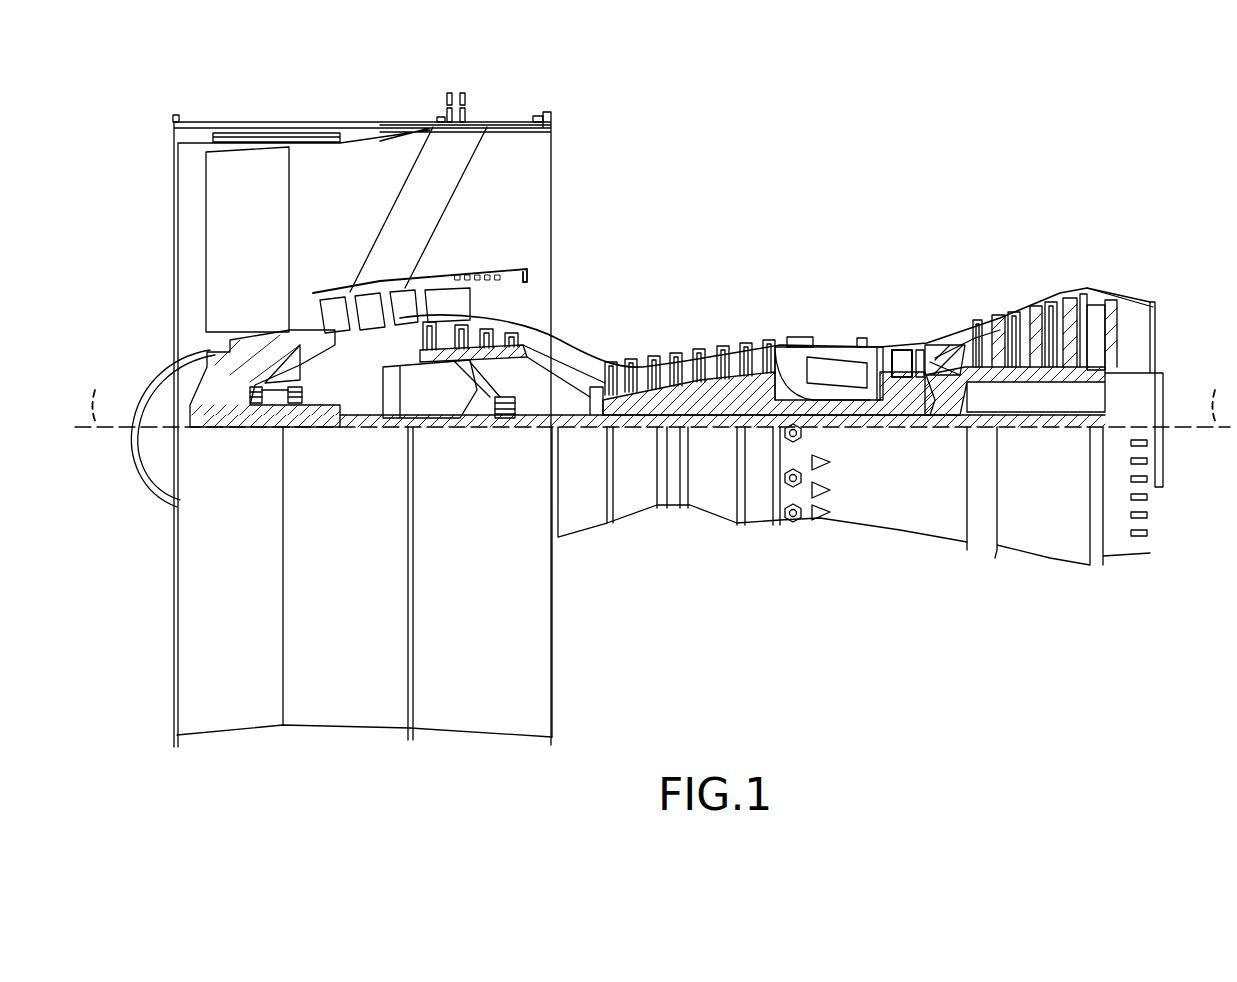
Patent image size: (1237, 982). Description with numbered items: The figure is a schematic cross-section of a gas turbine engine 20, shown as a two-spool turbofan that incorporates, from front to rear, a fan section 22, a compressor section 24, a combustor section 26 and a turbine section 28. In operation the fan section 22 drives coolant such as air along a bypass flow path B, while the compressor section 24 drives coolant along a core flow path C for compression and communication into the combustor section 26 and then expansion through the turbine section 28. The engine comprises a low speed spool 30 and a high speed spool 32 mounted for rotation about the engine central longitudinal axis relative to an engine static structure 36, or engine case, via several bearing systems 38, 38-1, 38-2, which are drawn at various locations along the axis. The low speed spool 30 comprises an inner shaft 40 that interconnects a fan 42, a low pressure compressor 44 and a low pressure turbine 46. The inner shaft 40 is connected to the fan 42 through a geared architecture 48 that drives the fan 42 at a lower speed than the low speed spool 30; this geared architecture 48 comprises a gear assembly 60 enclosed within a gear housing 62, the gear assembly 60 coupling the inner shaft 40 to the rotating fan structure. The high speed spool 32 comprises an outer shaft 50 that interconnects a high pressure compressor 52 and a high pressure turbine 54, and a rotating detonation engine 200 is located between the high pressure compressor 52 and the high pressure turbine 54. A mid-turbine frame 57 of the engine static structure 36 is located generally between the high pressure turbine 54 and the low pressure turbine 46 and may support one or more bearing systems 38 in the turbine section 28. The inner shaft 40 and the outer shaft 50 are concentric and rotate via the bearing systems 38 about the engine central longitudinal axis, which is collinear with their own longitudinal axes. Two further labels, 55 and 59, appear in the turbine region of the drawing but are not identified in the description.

The gas turbine engine 20 is at (882, 152).
The fan section 22 is at (168, 102).
The compressor section 24 is at (415, 230).
The combustor section 26 is at (780, 230).
The turbine section 28 is at (1095, 230).
The low speed spool 30 is at (718, 458).
The high speed spool 32 is at (755, 400).
The engine static structure 36 is at (343, 710).
The bearing system 38 is at (945, 420).
The bearing system 38-1 is at (255, 410).
The bearing system 38-2 is at (505, 420).
The inner shaft 40 is at (572, 427).
The fan 42 is at (256, 248).
The low pressure compressor 44 is at (485, 328).
The low pressure turbine 46 is at (1030, 318).
The geared architecture 48 is at (374, 456).
The outer shaft 50 is at (825, 412).
The high pressure compressor 52 is at (698, 400).
The high pressure turbine 54 is at (900, 350).
The mid-turbine frame 55 is at (930, 353).
The mid-turbine frame 57 is at (940, 360).
The core airflow path 59 is at (950, 353).
The gear assembly 60 is at (378, 407).
The gear housing 62 is at (373, 372).
The rotating detonation engine 200 is at (830, 370).
The bypass flow path B is at (372, 203).
The core flow path C is at (306, 312).